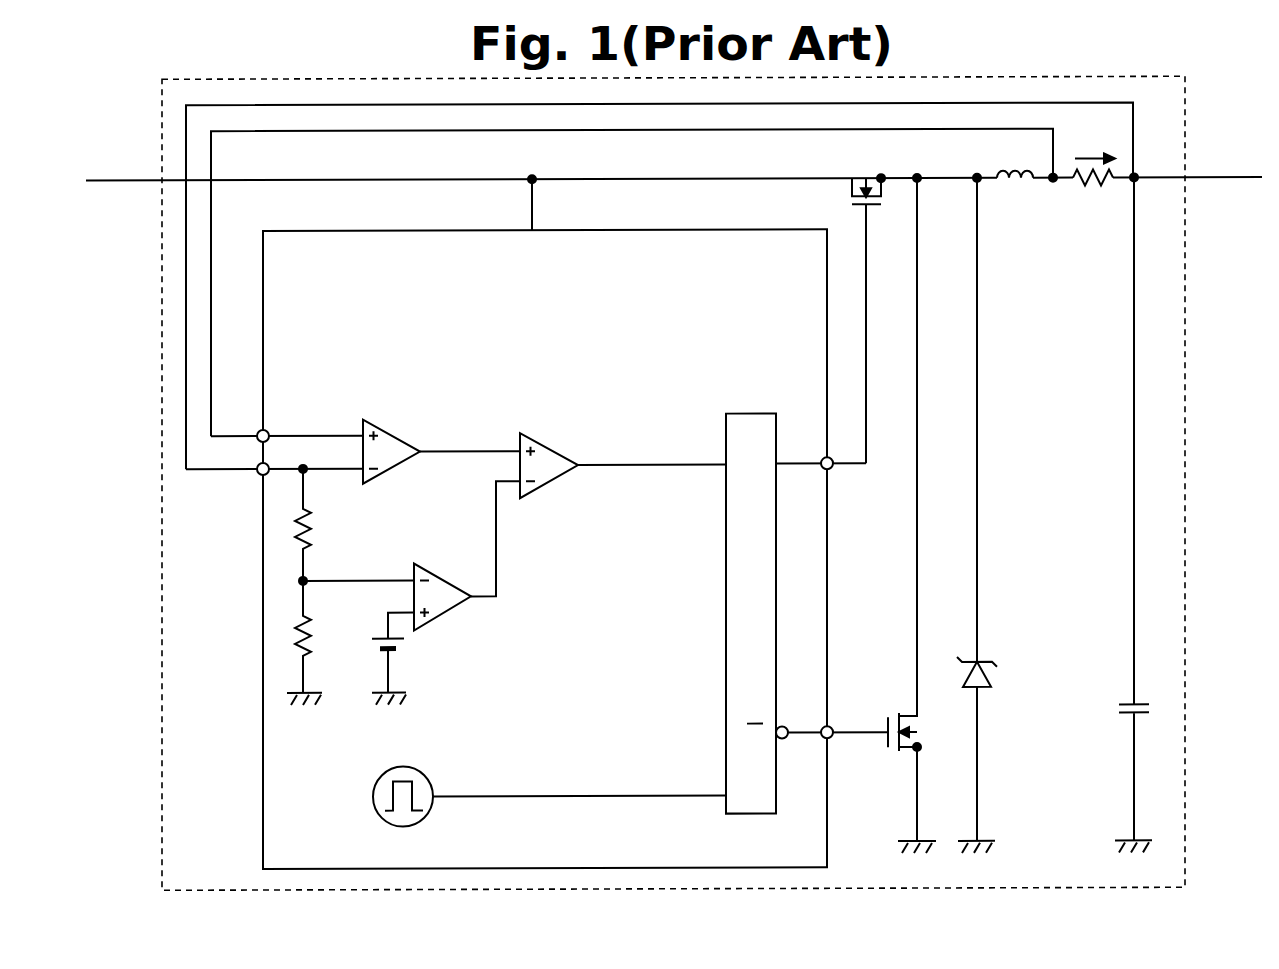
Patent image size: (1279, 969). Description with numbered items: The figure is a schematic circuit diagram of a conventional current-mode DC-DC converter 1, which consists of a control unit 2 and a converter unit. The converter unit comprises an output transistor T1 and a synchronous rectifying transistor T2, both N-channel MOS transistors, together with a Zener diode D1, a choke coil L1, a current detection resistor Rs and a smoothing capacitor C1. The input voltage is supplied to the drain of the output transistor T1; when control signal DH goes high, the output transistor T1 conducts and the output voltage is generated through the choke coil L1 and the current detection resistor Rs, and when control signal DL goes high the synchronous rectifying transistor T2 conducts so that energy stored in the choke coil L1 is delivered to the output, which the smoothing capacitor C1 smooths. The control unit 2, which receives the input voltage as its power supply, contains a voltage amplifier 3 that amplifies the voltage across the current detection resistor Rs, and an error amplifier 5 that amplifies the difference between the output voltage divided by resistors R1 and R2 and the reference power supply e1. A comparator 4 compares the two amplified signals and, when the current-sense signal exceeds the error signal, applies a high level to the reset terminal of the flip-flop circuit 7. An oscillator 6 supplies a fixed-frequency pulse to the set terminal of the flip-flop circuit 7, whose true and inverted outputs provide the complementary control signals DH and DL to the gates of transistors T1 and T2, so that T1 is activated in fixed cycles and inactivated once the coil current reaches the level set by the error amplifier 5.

The current-mode DC-DC converter 1 is at (1186, 88).
The control unit 2 is at (755, 229).
The voltage amplifier 3 is at (383, 419).
The comparator 4 is at (540, 434).
The error amplifier 5 is at (448, 565).
The oscillator 6 is at (422, 770).
The flip-flop circuit 7 is at (745, 413).
The output transistor T1 is at (853, 183).
The synchronous rectifying transistor T2 is at (907, 717).
The Zener diode D1 is at (1000, 640).
The choke coil L1 is at (1008, 192).
The current detection resistor Rs is at (1085, 195).
The smoothing capacitor C1 is at (1128, 705).
The resistor R1 is at (311, 522).
The resistor R2 is at (311, 630).
The reference power supply e1 is at (402, 641).